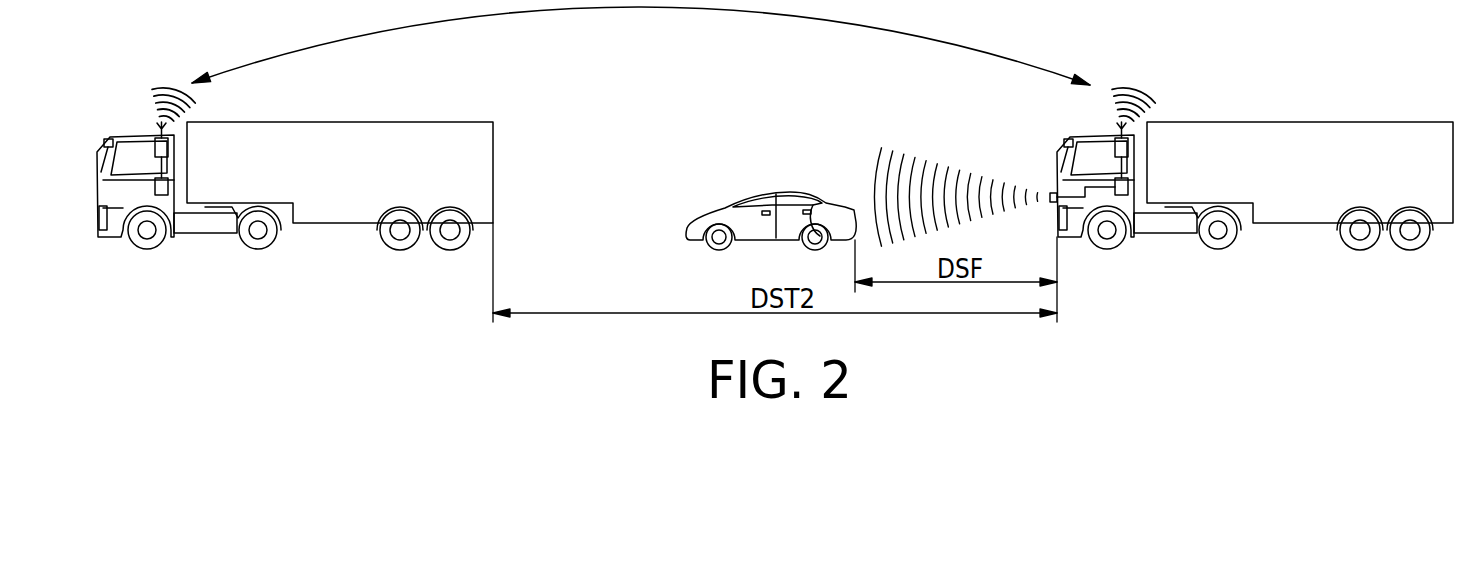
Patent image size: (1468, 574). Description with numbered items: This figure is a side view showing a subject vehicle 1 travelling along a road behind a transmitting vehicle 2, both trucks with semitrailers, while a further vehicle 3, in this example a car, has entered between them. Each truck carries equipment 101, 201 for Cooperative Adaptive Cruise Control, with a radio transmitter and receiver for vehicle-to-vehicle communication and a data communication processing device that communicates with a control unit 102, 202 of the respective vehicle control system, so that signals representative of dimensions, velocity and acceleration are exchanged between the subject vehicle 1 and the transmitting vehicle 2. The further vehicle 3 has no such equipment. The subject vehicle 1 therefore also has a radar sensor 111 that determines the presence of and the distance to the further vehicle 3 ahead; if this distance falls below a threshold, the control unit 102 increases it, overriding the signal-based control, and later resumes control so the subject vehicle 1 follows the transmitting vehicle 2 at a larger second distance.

The subject vehicle 1 is at (1297, 121).
The transmitting vehicle 2 is at (337, 121).
The further vehicle 3 is at (773, 193).
The equipment for Cooperative Adaptive Cruise Control 101 is at (1130, 131).
The control unit 102 is at (1130, 190).
The radar sensor 111 is at (1049, 196).
The equipment for Cooperative Adaptive Cruise Control 201 is at (154, 129).
The control unit 202 is at (170, 190).